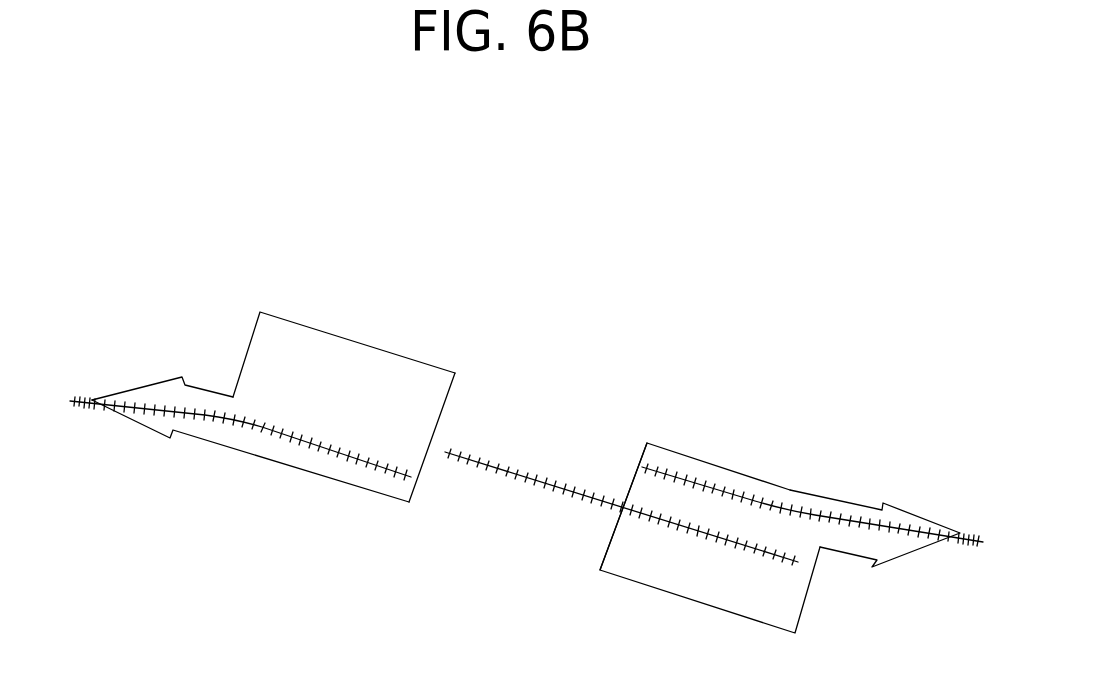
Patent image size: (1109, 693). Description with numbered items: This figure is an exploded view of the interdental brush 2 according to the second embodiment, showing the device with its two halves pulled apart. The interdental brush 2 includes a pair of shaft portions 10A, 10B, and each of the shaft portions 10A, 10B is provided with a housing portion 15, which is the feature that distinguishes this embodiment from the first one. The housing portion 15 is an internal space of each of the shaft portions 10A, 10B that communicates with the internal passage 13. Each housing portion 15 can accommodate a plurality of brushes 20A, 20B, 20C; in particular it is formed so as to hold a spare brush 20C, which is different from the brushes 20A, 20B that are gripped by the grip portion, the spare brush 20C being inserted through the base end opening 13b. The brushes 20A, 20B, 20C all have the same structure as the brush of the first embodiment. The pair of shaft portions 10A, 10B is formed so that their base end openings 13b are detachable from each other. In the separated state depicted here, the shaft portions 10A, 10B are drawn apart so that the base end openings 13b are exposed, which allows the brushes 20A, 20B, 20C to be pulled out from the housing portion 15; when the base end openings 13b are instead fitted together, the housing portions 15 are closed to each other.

The interdental brush 2 is at (593, 270).
The shaft portion 10A is at (360, 328).
The shaft portion 10B is at (743, 462).
The internal passage 13 is at (197, 427).
The base end opening 13b is at (450, 398).
The housing portion 15 is at (526, 421).
The brush 20A is at (327, 441).
The brush 20B is at (787, 510).
The spare brush 20C is at (529, 478).